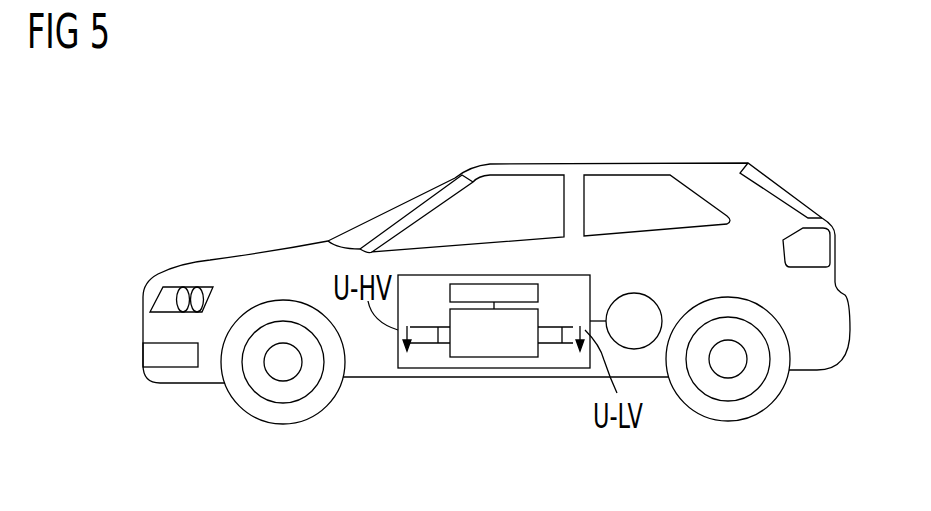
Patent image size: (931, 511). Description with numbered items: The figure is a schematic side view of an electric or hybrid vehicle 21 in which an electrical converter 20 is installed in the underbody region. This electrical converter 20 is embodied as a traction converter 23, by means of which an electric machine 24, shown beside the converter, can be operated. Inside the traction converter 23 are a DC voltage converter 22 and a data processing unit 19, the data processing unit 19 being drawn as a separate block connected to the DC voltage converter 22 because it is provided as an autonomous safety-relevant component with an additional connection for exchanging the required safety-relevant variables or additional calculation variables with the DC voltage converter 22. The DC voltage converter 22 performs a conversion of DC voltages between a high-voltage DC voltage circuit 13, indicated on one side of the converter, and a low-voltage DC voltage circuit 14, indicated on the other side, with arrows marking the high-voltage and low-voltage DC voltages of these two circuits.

The high-voltage DC voltage circuit 13 is at (417, 344).
The low-voltage DC voltage circuit 14 is at (548, 344).
The data processing unit 19 is at (538, 292).
The electrical converter 20 is at (494, 376).
The electric or hybrid vehicle 21 is at (272, 252).
The DC voltage converter 22 is at (515, 358).
The traction converter 23 is at (474, 361).
The electric machine 24 is at (663, 294).